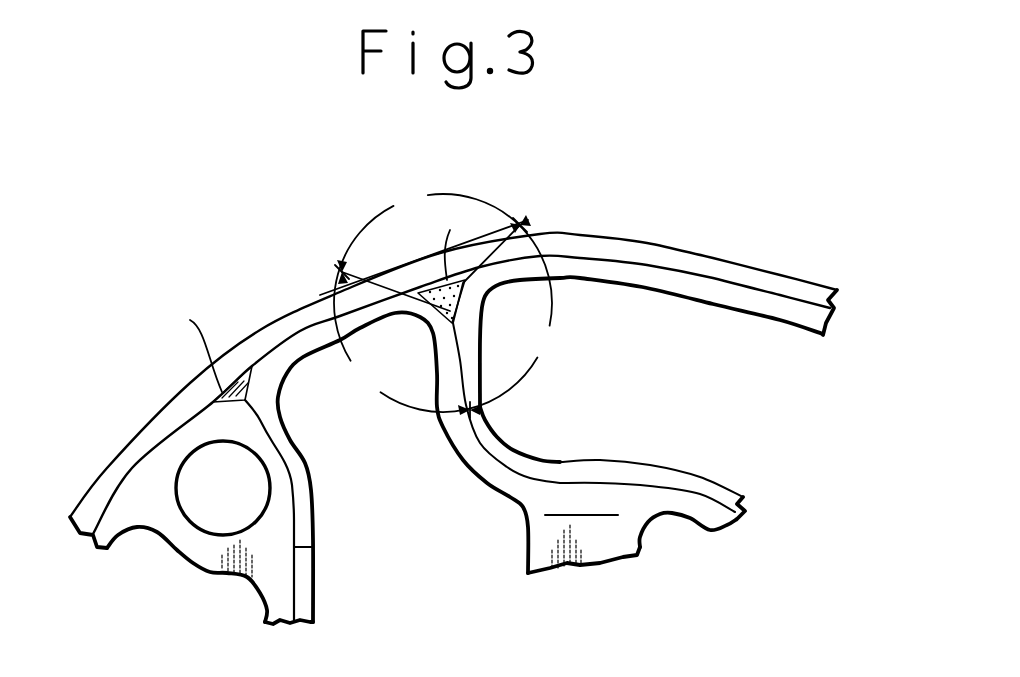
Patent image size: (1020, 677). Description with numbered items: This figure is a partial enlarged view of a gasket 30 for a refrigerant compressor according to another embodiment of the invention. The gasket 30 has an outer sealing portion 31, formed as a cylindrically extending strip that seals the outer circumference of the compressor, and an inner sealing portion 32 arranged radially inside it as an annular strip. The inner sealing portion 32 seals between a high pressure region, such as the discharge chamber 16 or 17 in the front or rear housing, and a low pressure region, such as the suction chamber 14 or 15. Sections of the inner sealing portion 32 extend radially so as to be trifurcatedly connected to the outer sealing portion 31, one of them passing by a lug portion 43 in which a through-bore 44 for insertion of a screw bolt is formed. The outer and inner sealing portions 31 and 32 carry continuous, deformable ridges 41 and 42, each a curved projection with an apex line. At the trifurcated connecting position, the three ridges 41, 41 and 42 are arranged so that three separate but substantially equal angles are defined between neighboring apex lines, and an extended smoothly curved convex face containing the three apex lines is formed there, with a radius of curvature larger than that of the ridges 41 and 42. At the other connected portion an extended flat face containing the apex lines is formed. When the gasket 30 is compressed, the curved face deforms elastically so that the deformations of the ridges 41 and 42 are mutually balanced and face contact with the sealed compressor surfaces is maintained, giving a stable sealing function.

The gasket 30 is at (606, 199).
The outer sealing portion 31 is at (735, 268).
The ridge 41 is at (663, 263).
The suction chamber 14 is at (634, 366).
The suction chamber 15 is at (651, 396).
The discharge chamber 16 is at (367, 483).
The discharge chamber 17 is at (403, 467).
The ridge 42 is at (314, 548).
The inner sealing portion 32 is at (302, 608).
The lug portion 43 is at (163, 525).
The through-bore 44 is at (203, 452).